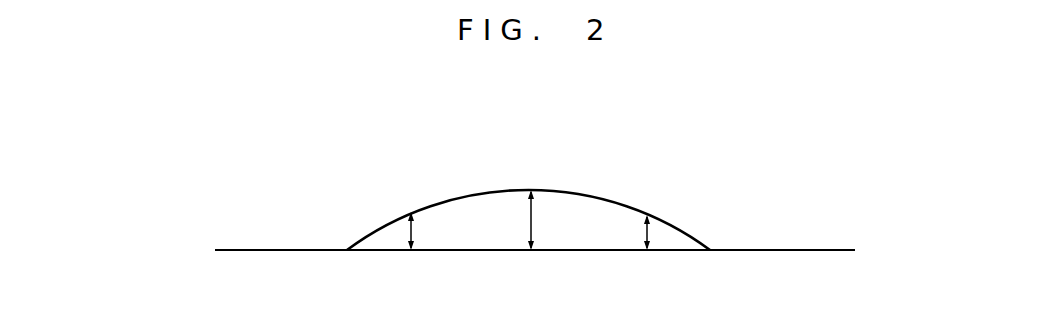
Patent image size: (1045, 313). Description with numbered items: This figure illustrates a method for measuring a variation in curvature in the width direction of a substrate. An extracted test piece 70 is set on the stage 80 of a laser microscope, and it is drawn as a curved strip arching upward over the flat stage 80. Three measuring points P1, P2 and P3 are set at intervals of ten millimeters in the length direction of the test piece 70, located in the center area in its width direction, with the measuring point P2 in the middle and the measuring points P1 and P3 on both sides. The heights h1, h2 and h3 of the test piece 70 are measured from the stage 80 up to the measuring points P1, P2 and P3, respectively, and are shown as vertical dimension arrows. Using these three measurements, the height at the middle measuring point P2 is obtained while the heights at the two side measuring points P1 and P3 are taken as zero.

The test piece 70 is at (595, 197).
The stage 80 is at (282, 248).
The measuring point P1 is at (411, 212).
The middle measuring point P2 is at (531, 190).
The measuring point P3 is at (647, 215).
The height h1 is at (427, 231).
The height h2 is at (546, 220).
The height h3 is at (631, 232).